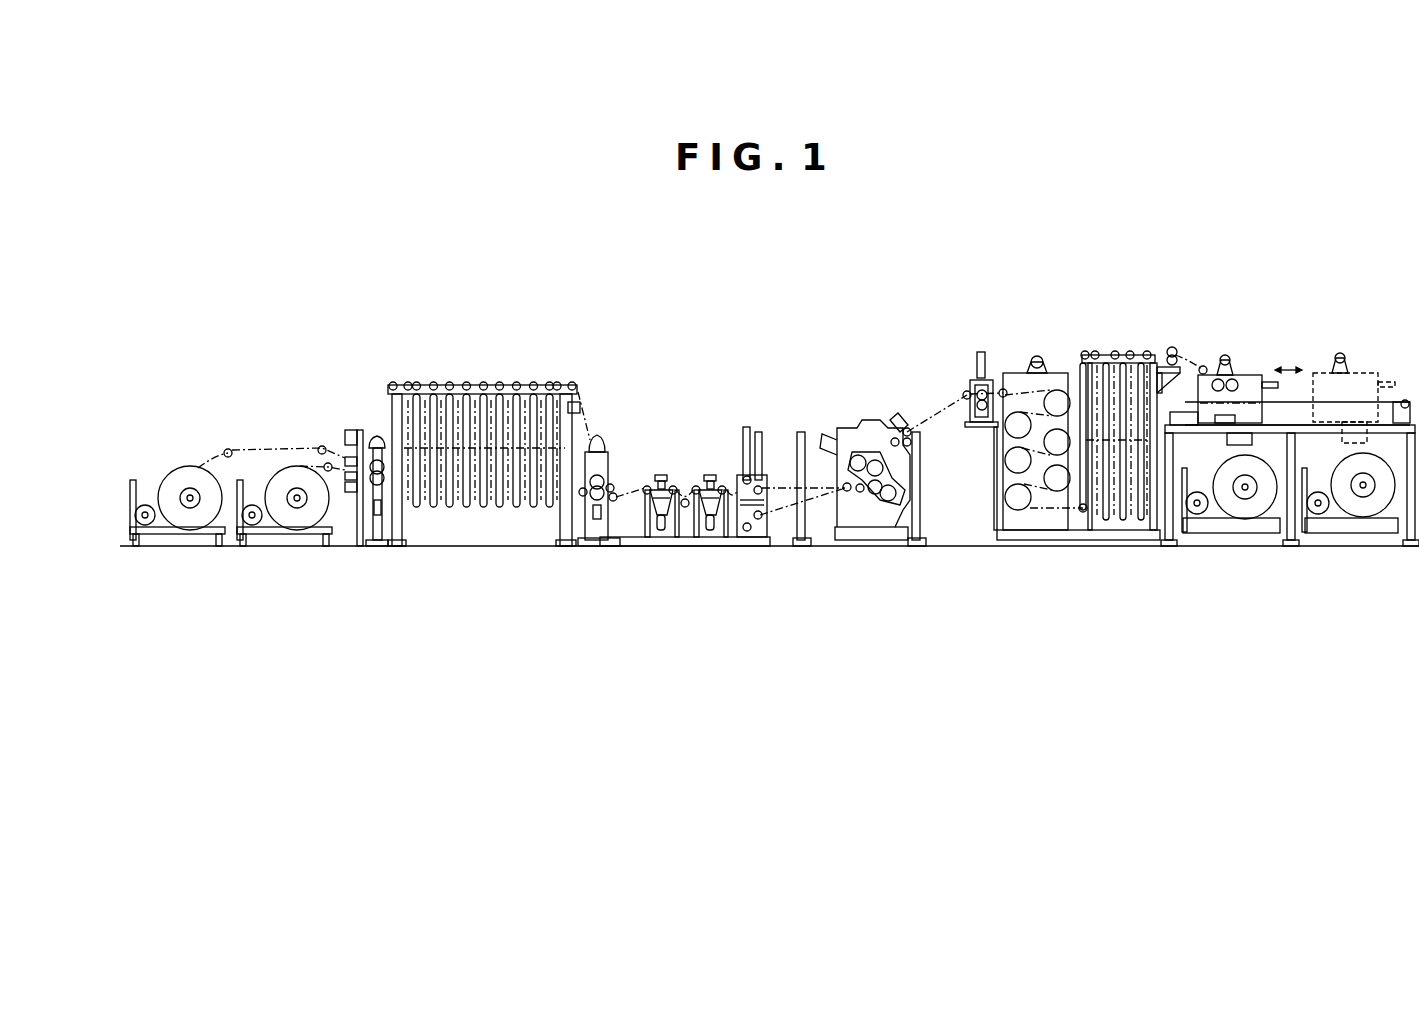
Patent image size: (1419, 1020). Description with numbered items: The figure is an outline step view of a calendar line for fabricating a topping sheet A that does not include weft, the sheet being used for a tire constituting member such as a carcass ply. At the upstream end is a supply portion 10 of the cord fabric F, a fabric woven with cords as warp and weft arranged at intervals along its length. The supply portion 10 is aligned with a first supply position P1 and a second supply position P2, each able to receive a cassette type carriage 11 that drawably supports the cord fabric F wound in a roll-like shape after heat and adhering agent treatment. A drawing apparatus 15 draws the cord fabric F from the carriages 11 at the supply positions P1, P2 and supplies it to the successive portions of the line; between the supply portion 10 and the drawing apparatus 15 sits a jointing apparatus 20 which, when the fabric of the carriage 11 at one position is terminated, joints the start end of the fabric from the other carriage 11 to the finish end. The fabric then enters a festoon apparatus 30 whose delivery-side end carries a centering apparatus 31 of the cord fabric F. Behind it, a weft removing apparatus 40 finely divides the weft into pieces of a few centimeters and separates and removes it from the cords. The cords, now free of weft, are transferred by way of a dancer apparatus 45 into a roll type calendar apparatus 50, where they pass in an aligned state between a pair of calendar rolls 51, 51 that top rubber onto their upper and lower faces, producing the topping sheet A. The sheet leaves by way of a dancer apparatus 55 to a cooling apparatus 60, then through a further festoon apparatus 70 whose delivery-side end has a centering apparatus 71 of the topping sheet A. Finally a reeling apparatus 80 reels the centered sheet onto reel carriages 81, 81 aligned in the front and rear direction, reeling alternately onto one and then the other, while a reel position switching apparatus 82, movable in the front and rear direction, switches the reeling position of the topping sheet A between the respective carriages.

The supply portion 10 is at (239, 525).
The cassette type carriage 11 is at (180, 548).
The drawing apparatus 15 is at (374, 438).
The jointing apparatus 20 is at (350, 422).
The festoon apparatus 30 is at (502, 375).
The centering apparatus 31 is at (584, 440).
The weft removing apparatus 40 is at (685, 556).
The dancer apparatus 45 is at (746, 420).
The roll type calendar apparatus 50 is at (859, 473).
The calendar roll 51 is at (875, 465).
The dancer apparatus 55 is at (981, 343).
The cooling apparatus 60 is at (1037, 350).
The festoon apparatus 70 is at (1122, 345).
The centering apparatus 71 is at (1176, 350).
The reeling apparatus 80 is at (1290, 462).
The reel carriage 81 is at (1235, 530).
The reel position switching apparatus 82 is at (1245, 380).
The topping sheet A is at (942, 405).
The cord fabric F is at (188, 470).
The first supply position P1 is at (155, 556).
The second supply position P2 is at (316, 556).